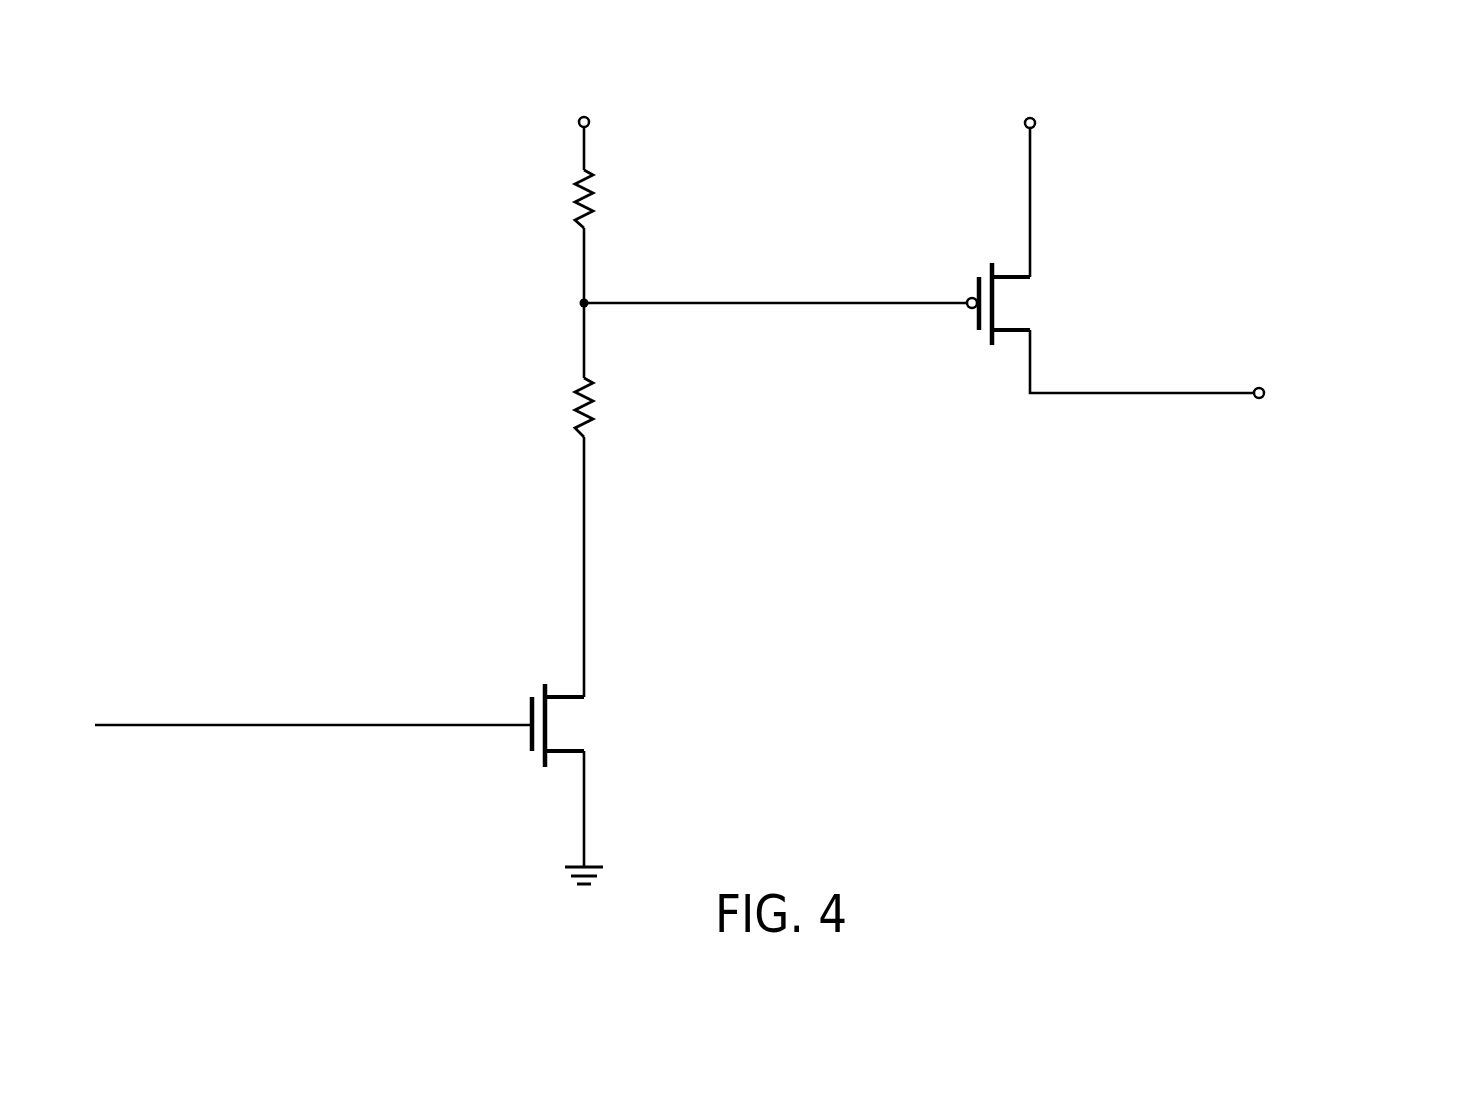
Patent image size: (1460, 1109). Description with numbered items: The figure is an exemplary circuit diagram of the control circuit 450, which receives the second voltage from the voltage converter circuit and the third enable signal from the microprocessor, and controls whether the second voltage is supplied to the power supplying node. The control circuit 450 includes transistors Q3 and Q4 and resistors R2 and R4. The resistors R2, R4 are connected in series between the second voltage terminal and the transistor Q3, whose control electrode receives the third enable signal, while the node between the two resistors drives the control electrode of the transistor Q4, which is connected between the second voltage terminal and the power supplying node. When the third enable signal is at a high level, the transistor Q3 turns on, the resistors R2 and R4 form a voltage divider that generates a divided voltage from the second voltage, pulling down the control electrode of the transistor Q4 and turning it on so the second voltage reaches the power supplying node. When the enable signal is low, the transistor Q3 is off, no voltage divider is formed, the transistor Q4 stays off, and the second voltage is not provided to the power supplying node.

The control circuit 450 is at (278, 97).
The resistor R2 is at (605, 206).
The resistor R4 is at (605, 413).
The transistor Q3 is at (590, 728).
The transistor Q4 is at (1038, 306).